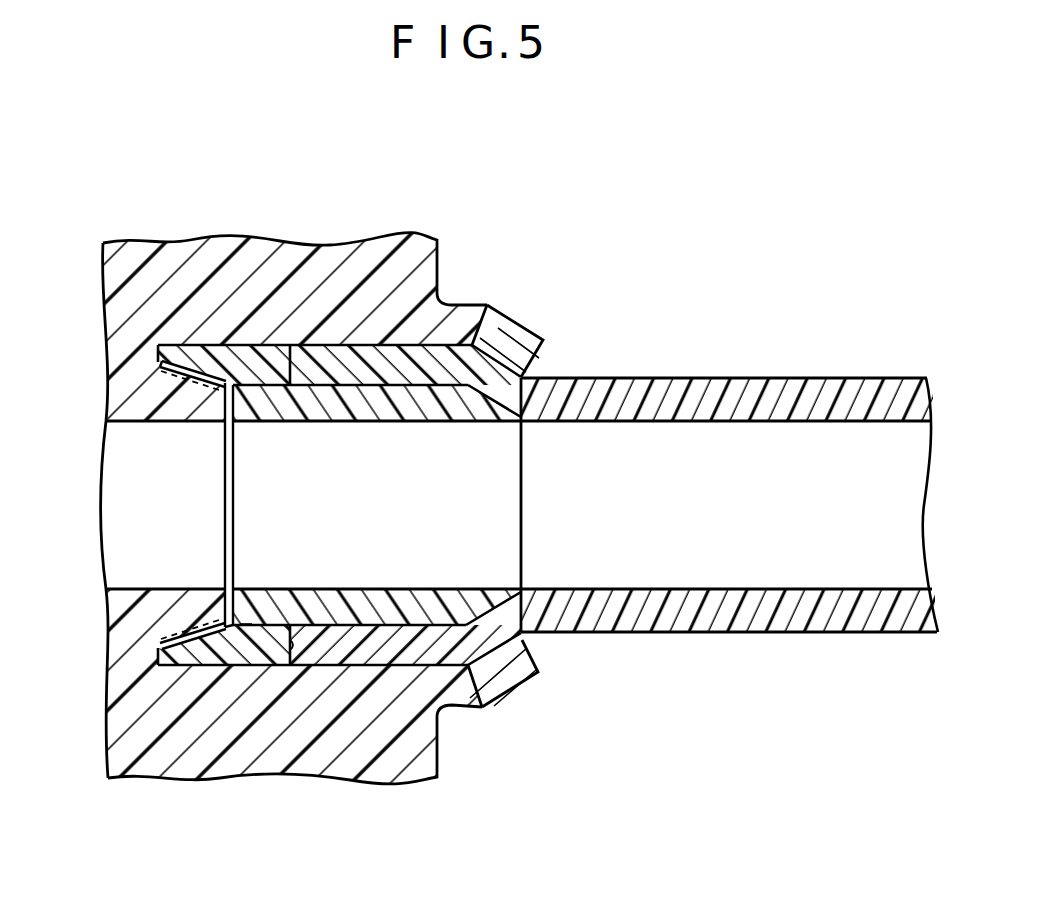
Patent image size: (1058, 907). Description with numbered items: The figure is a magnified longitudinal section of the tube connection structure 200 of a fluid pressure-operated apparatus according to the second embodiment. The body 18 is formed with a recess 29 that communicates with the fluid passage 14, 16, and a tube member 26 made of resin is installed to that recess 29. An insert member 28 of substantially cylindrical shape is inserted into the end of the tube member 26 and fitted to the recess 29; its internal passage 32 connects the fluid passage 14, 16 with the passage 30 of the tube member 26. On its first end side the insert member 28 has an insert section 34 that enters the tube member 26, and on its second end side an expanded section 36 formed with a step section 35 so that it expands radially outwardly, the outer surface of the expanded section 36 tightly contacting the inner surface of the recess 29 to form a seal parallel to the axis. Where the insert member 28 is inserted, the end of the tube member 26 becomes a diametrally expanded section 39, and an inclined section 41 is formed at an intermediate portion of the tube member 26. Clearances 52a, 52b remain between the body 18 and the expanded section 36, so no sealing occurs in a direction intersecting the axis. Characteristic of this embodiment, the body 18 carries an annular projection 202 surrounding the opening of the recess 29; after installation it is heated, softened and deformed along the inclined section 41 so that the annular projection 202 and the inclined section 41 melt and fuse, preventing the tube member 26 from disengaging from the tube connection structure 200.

The fluid passage 14 is at (188, 505).
The fluid passage 16 is at (143, 505).
The body 18 is at (195, 781).
The tube member 26 is at (769, 379).
The insert member 28 is at (266, 346).
The recess 29 is at (334, 350).
The passage 30 is at (737, 528).
The passage 32 is at (373, 522).
The insert section 34 is at (432, 405).
The step section 35 is at (290, 650).
The expanded section 36 is at (223, 345).
The diametrally expanded section 39 is at (425, 368).
The inclined section 41 is at (483, 377).
The clearance 52a is at (167, 643).
The clearance 52b is at (252, 624).
The tube connection structure 200 is at (524, 215).
The annular projection 202 is at (508, 328).